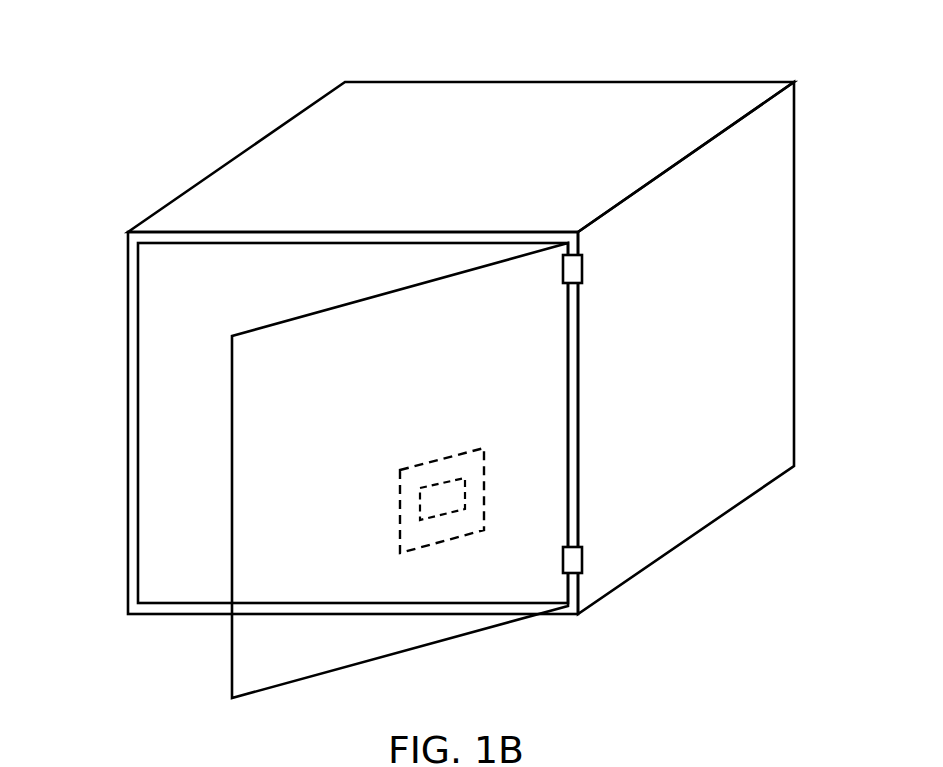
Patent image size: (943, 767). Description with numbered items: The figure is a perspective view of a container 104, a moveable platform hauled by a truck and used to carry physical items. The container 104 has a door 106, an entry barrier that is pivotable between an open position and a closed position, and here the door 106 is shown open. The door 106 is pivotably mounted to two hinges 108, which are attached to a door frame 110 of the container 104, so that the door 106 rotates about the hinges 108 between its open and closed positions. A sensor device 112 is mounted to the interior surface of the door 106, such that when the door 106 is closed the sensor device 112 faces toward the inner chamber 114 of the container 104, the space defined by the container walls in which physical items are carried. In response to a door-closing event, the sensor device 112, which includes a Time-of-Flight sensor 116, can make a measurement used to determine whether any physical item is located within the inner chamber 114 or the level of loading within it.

The container 104 is at (502, 100).
The door 106 is at (280, 343).
The hinges 108 is at (582, 268).
The door frame 110 is at (130, 274).
The sensor device 112 is at (443, 457).
The inner chamber 114 is at (172, 448).
The Time-of-Flight sensor 116 is at (440, 515).